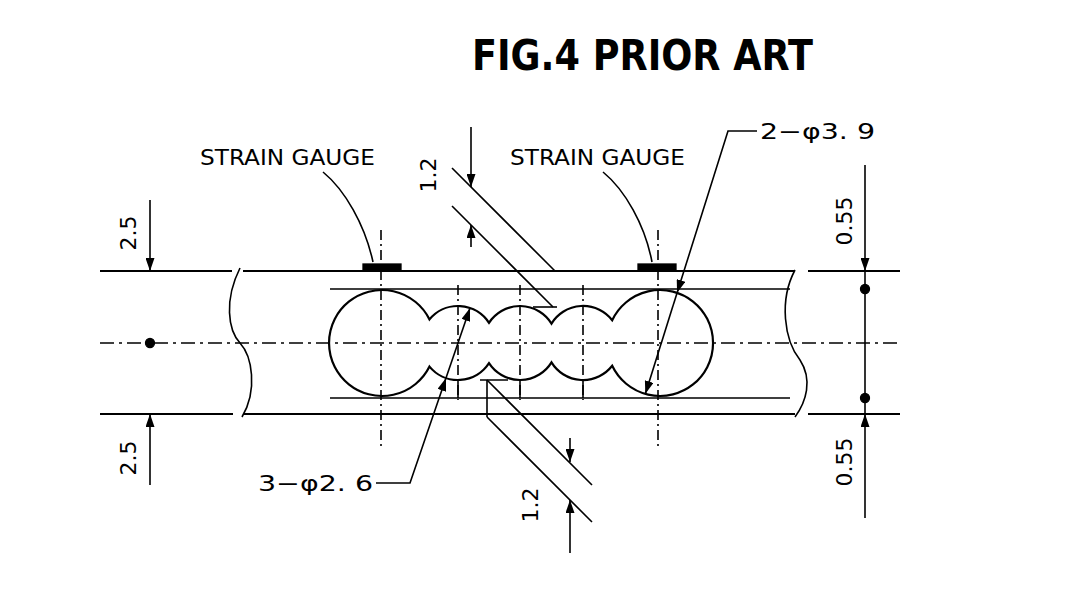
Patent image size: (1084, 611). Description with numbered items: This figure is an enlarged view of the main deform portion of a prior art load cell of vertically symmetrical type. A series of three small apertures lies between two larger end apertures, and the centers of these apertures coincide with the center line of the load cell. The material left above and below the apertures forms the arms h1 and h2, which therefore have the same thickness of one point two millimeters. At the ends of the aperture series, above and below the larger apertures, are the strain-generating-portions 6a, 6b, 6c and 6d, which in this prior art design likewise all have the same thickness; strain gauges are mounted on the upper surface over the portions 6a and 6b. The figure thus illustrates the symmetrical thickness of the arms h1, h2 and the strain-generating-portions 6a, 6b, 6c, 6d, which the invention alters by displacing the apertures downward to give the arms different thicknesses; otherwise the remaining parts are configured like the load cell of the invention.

The strain-generating-portion 6a is at (372, 284).
The strain-generating-portion 6b is at (680, 284).
The strain-generating-portion 6c is at (379, 404).
The strain-generating-portion 6d is at (667, 405).
The arm h1 is at (557, 307).
The arm h2 is at (487, 417).